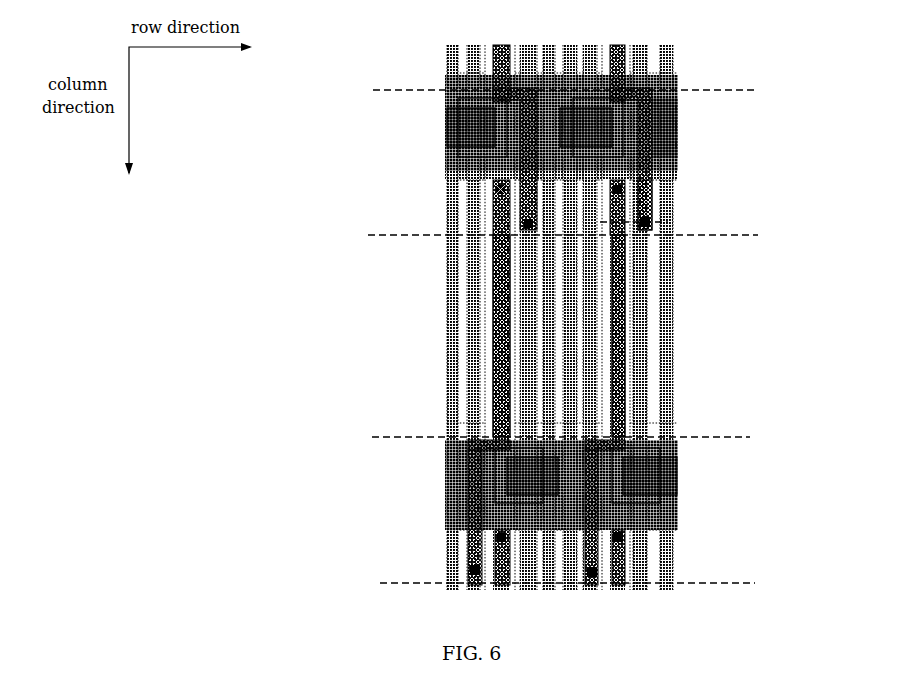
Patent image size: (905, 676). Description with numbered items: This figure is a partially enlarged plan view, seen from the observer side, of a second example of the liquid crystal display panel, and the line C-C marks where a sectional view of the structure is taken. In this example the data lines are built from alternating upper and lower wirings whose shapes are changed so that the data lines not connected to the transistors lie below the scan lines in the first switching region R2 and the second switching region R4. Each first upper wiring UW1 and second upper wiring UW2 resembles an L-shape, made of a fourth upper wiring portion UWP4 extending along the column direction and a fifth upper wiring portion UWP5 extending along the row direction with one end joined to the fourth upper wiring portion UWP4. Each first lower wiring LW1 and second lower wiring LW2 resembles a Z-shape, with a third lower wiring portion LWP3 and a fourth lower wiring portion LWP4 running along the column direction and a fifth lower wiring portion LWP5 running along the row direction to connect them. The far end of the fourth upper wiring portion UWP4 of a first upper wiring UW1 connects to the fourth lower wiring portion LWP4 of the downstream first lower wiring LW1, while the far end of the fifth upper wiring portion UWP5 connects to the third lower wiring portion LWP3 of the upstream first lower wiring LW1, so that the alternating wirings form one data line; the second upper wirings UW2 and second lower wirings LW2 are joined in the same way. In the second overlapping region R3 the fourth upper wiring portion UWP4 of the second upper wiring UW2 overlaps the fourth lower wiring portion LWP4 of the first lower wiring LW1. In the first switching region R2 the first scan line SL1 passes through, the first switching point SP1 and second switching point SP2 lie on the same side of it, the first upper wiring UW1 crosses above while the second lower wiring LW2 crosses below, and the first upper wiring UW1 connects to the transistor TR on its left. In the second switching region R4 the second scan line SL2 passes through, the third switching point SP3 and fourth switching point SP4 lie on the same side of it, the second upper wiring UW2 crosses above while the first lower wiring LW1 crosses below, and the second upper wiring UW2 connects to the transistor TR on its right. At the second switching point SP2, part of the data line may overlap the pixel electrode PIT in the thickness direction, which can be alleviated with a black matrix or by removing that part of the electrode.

The fourth upper wiring portion UWP4 is at (497, 75).
The fifth upper wiring portion UWP5 is at (645, 213).
The third lower wiring portion LWP3 is at (652, 192).
The fourth lower wiring portion LWP4 is at (495, 290).
The fifth lower wiring portion LWP5 is at (640, 80).
The first upper wiring UW1 is at (497, 110).
The second upper wiring UW2 is at (625, 395).
The first lower wiring LW1 is at (495, 330).
The second lower wiring LW2 is at (653, 150).
The first scan line SL1 is at (660, 127).
The second scan line SL2 is at (670, 503).
The first switching point SP1 is at (497, 190).
The second switching point SP2 is at (645, 221).
The third switching point SP3 is at (472, 572).
The fourth switching point SP4 is at (620, 537).
The first switching region R2 is at (545, 127).
The second overlapping region R3 is at (547, 336).
The second switching region R4 is at (547, 485).
The transistor TR is at (673, 457).
The pixel electrode PIT is at (667, 370).
The C-C section C-C is at (648, 237).